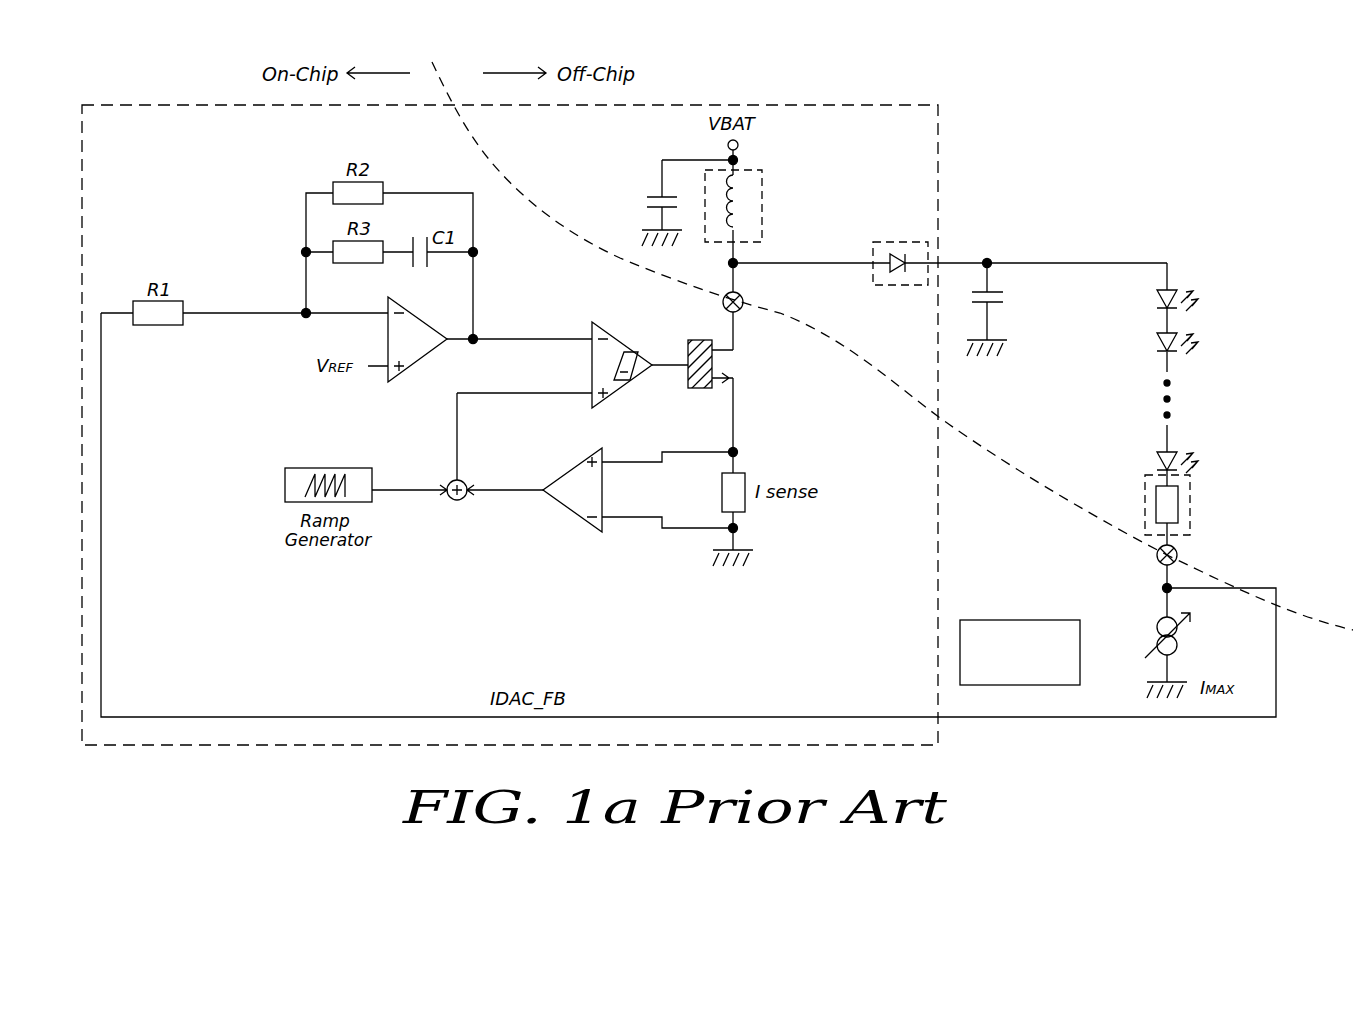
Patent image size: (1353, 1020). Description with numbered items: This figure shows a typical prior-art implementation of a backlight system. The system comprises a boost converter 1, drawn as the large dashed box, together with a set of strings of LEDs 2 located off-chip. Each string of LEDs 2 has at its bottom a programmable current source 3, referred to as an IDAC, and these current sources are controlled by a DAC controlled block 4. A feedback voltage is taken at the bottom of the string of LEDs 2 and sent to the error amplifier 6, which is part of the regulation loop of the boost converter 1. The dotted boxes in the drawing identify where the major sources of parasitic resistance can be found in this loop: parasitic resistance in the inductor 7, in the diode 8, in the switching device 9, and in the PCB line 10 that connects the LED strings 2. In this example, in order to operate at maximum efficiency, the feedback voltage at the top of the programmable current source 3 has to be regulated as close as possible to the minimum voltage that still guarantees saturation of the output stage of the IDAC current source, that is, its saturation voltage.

The boost converter 1 is at (218, 745).
The strings of LEDs 2 is at (1190, 352).
The programmable current source (IDAC) 3 is at (1182, 642).
The DAC controlled block 4 is at (1060, 620).
The error amplifier 6 is at (436, 355).
The inductor 7 is at (762, 180).
The diode 8 is at (905, 285).
The switching device 9 is at (730, 361).
The PCB line 10 is at (1190, 500).